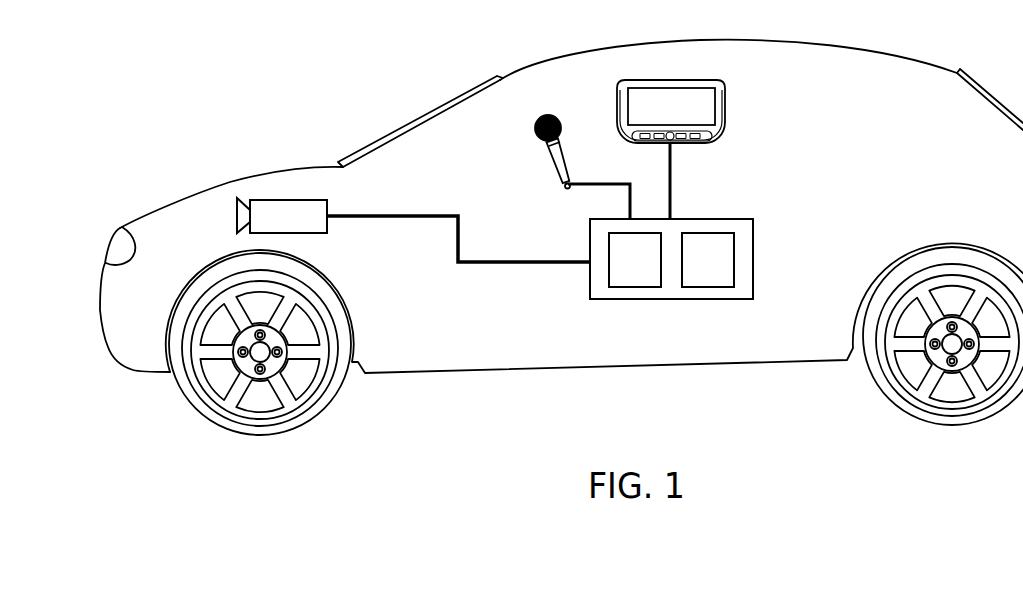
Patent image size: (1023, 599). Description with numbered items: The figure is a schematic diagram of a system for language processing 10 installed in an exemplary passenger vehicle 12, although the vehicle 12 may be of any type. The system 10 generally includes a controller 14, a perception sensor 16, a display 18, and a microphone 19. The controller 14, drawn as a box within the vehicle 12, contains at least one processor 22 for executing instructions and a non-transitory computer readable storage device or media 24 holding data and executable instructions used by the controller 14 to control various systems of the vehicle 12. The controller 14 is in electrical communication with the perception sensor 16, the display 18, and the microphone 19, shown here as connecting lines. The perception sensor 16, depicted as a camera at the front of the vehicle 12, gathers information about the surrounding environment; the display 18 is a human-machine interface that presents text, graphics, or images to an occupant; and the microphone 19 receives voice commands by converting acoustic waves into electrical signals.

The system for language processing 10 is at (848, 155).
The vehicle 12 is at (231, 181).
The controller 14 is at (733, 301).
The perception sensor 16 is at (305, 227).
The display 18 is at (727, 82).
The microphone 19 is at (552, 167).
The processor 22 is at (652, 271).
The non-transitory computer readable storage device or media 24 is at (725, 271).